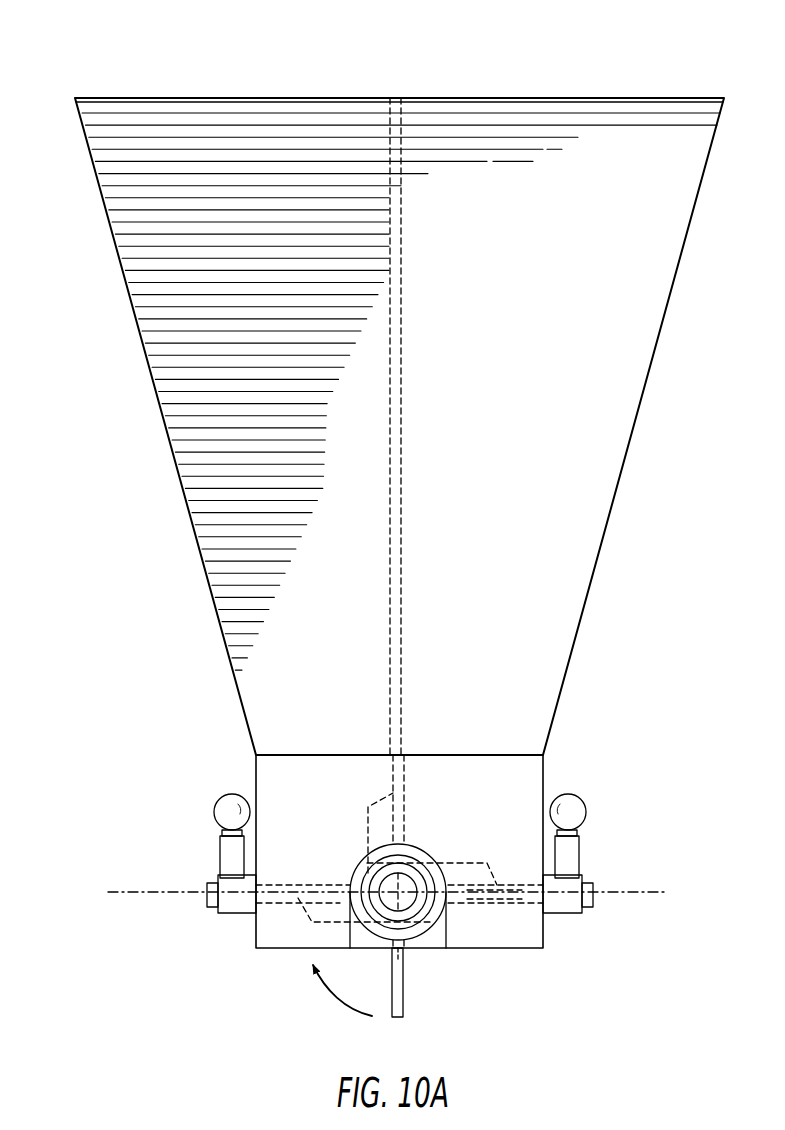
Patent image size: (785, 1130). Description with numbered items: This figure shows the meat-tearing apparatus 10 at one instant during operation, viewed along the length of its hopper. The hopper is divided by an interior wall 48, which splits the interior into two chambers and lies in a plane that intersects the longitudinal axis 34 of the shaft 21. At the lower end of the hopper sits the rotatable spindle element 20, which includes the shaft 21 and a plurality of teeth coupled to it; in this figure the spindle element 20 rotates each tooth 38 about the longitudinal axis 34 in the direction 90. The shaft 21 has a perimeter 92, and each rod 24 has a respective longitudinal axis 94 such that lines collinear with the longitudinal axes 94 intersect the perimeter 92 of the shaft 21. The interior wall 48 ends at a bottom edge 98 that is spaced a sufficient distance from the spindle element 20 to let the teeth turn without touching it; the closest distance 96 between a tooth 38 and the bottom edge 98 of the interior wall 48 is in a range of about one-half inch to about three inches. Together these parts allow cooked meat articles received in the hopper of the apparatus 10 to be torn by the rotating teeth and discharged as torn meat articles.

The meat-tearing apparatus 10 is at (145, 53).
The interior wall 48 is at (400, 598).
The rotatable spindle element 20 is at (428, 742).
The bottom edge 98 is at (395, 756).
The closest distance 96 is at (413, 755).
The shaft 21 is at (400, 888).
The perimeter 92 is at (418, 885).
The longitudinal axis 34 is at (403, 897).
The tooth 38 is at (403, 994).
The rod 24 is at (282, 898).
The longitudinal axis 94 is at (162, 890).
The direction 90 is at (320, 1000).